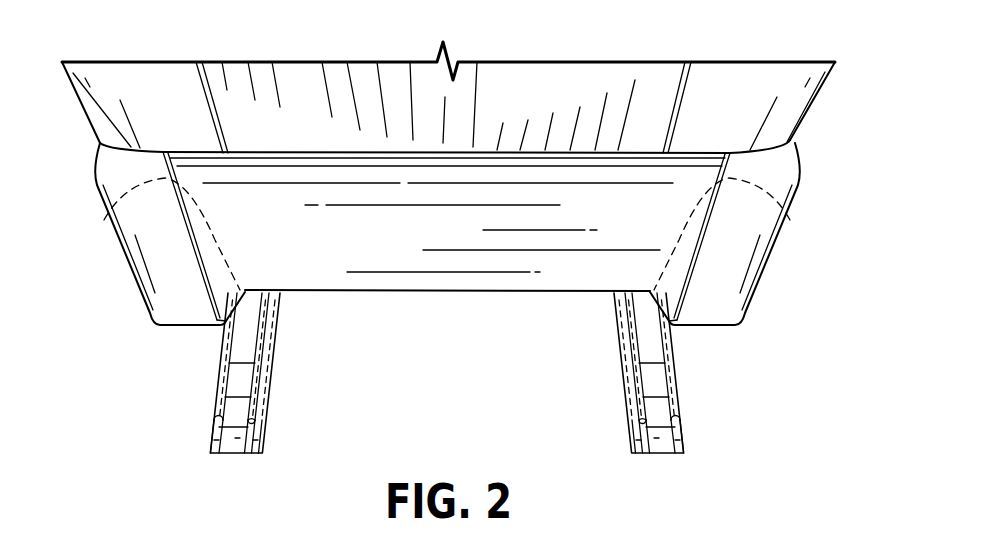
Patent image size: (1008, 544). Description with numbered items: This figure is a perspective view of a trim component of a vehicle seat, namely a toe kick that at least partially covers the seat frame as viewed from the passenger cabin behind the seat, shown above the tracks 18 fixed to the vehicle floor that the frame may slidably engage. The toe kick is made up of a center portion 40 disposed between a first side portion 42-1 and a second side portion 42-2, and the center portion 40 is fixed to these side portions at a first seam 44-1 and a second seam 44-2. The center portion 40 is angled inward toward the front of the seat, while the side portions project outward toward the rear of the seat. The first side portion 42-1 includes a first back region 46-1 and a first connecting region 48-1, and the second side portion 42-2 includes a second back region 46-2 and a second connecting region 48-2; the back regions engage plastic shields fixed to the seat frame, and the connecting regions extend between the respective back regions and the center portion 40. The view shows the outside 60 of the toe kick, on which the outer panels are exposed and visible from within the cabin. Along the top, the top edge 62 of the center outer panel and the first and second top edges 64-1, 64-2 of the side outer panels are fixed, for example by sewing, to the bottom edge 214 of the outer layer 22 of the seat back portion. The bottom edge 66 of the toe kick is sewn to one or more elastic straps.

The tracks 18 is at (243, 378).
The outer layer 22 is at (563, 78).
The center portion 40 is at (437, 261).
The first side portion 42-1 is at (134, 233).
The second side portion 42-2 is at (760, 233).
The first seam 44-1 is at (107, 218).
The second seam 44-2 is at (790, 220).
The first back region 46-1 is at (165, 293).
The second back region 46-2 is at (729, 293).
The first connecting region 48-1 is at (208, 284).
The second connecting region 48-2 is at (674, 285).
The outside 60 is at (457, 194).
The top edge 62 is at (252, 155).
The first top edge 64-1 is at (133, 150).
The second top edge 64-2 is at (745, 150).
The bottom edge 66 is at (513, 292).
The bottom edge 214 is at (303, 155).